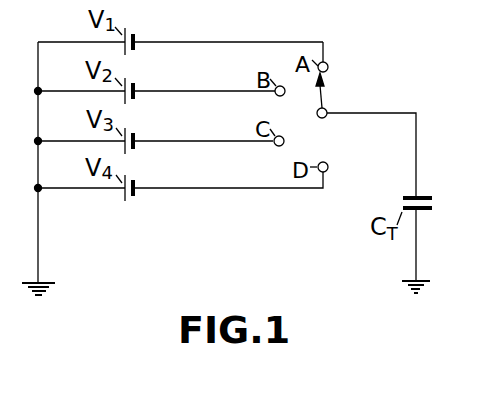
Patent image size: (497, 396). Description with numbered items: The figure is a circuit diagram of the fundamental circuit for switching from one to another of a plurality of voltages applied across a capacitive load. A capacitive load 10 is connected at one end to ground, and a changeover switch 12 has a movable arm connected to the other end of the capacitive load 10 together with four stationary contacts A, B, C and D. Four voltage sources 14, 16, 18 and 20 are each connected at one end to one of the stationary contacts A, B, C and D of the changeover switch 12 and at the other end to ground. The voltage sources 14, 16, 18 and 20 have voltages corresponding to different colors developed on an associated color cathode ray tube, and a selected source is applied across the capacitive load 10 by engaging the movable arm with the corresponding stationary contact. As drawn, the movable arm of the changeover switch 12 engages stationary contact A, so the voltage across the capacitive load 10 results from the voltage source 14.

The capacitive load 10 is at (432, 208).
The changeover switch 12 is at (323, 100).
The voltage source 14 is at (136, 36).
The voltage source 16 is at (135, 85).
The voltage source 18 is at (134, 135).
The voltage source 20 is at (135, 182).